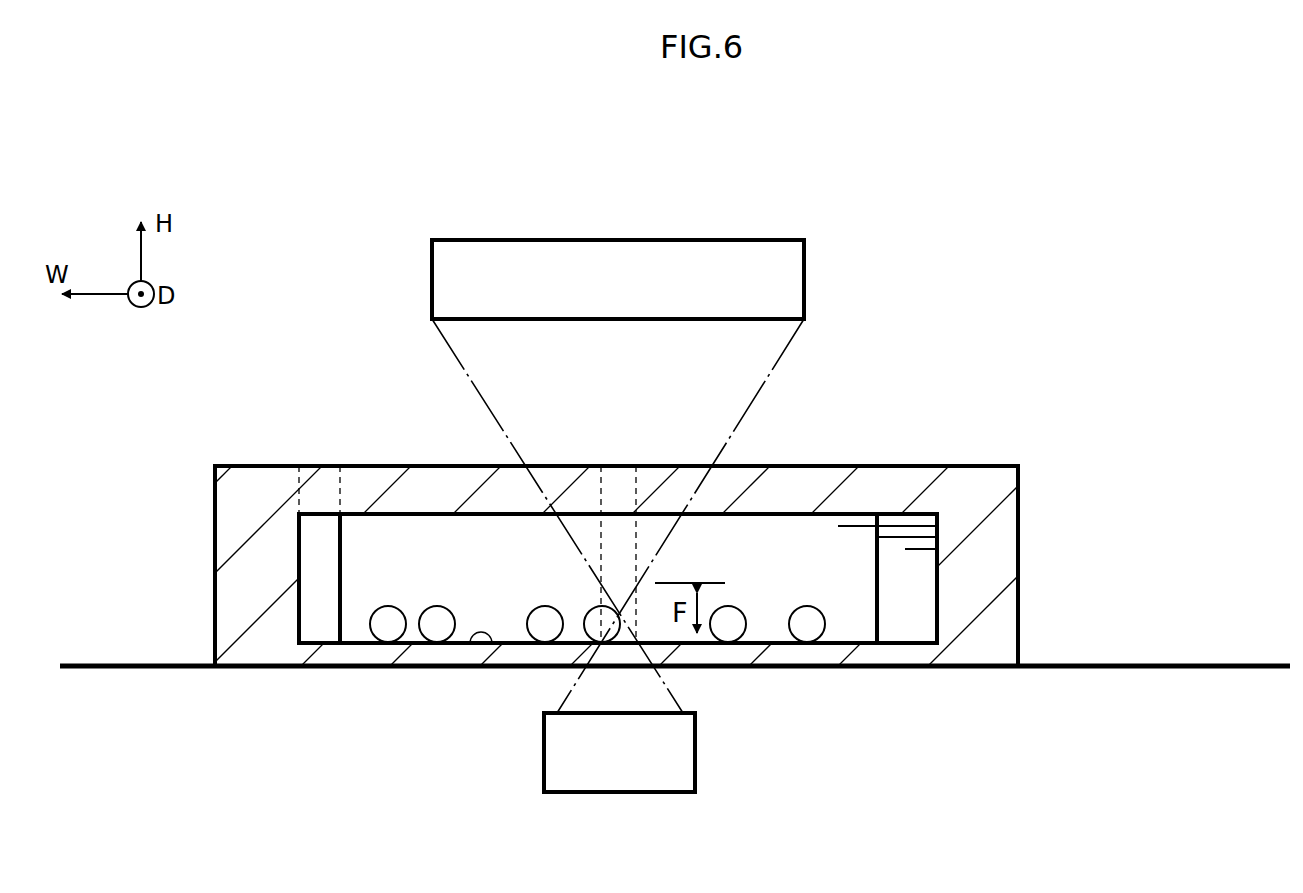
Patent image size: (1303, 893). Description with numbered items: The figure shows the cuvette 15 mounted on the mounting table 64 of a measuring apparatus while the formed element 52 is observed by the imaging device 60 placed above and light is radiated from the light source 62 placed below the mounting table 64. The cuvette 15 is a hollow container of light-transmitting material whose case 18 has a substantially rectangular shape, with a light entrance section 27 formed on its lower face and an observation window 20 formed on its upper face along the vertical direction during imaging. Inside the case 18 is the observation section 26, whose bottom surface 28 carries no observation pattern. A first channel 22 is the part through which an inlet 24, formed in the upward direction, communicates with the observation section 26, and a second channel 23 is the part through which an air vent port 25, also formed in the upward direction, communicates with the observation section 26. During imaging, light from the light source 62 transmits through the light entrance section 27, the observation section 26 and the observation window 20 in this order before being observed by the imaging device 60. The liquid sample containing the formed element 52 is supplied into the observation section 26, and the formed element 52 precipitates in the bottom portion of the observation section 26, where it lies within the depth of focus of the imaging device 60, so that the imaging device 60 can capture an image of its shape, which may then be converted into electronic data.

The cuvette 15 is at (1020, 497).
The case 18 is at (967, 466).
The observation window 20 is at (828, 466).
The first channel 22 is at (919, 573).
The second channel 23 is at (321, 574).
The inlet 24 is at (601, 486).
The air vent port 25 is at (297, 490).
The observation section 26 is at (362, 547).
The light entrance section 27 is at (373, 657).
The bottom surface 28 is at (475, 650).
The formed element 52 is at (437, 604).
The imaging device 60 is at (805, 262).
The light source 62 is at (695, 745).
The mounting table 64 is at (1213, 664).